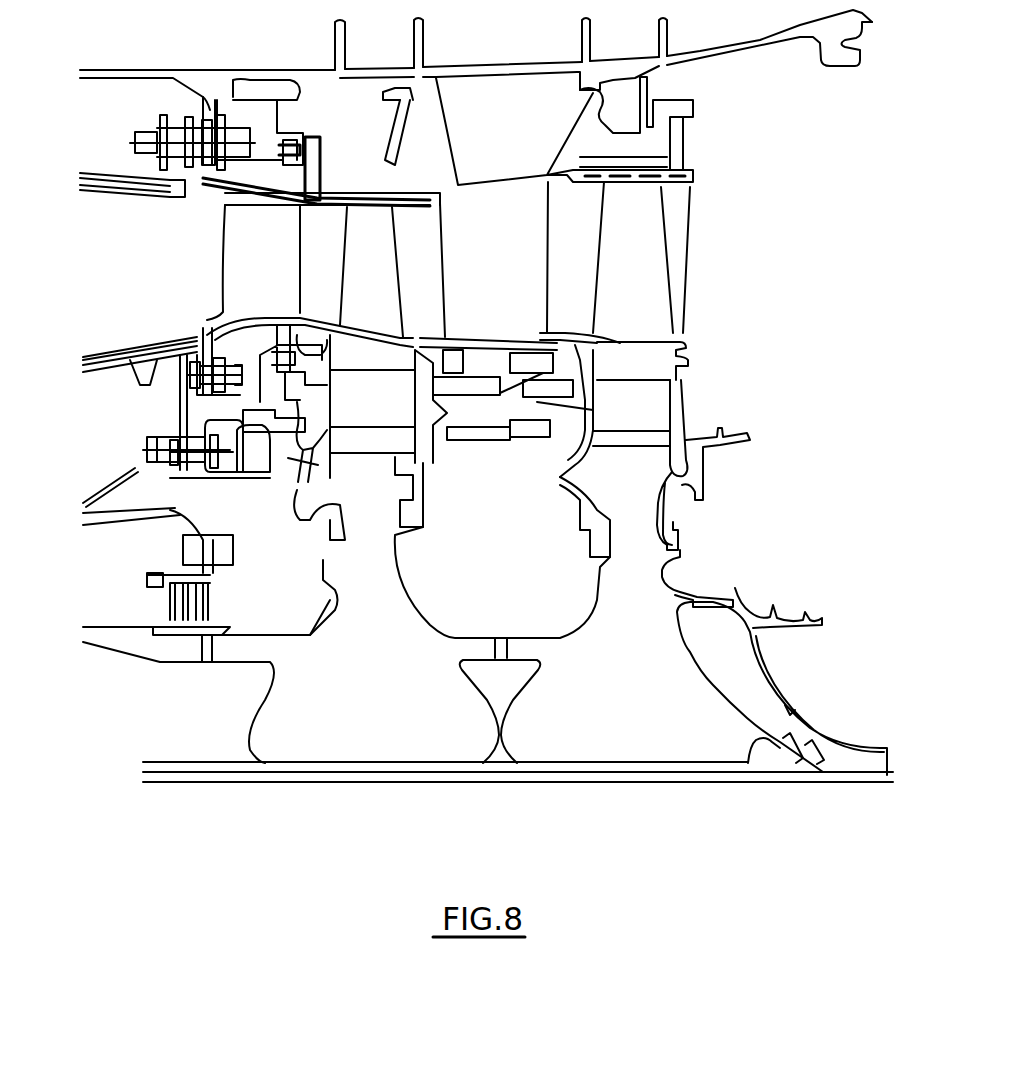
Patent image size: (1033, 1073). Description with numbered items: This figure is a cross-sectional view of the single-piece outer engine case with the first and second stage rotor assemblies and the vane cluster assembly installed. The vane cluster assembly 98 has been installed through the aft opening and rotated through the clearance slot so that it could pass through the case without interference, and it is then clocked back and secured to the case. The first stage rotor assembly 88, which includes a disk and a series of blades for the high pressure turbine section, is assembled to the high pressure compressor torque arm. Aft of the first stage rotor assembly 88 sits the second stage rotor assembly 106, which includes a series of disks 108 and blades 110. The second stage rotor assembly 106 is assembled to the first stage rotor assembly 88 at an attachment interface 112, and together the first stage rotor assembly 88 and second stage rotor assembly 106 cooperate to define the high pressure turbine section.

The vane cluster assembly 98 is at (558, 271).
The blades 110 is at (658, 263).
The first stage rotor assembly 88 is at (420, 580).
The attachment interface 112 is at (505, 632).
The second stage rotor assembly 106 is at (733, 552).
The disks 108 is at (653, 747).